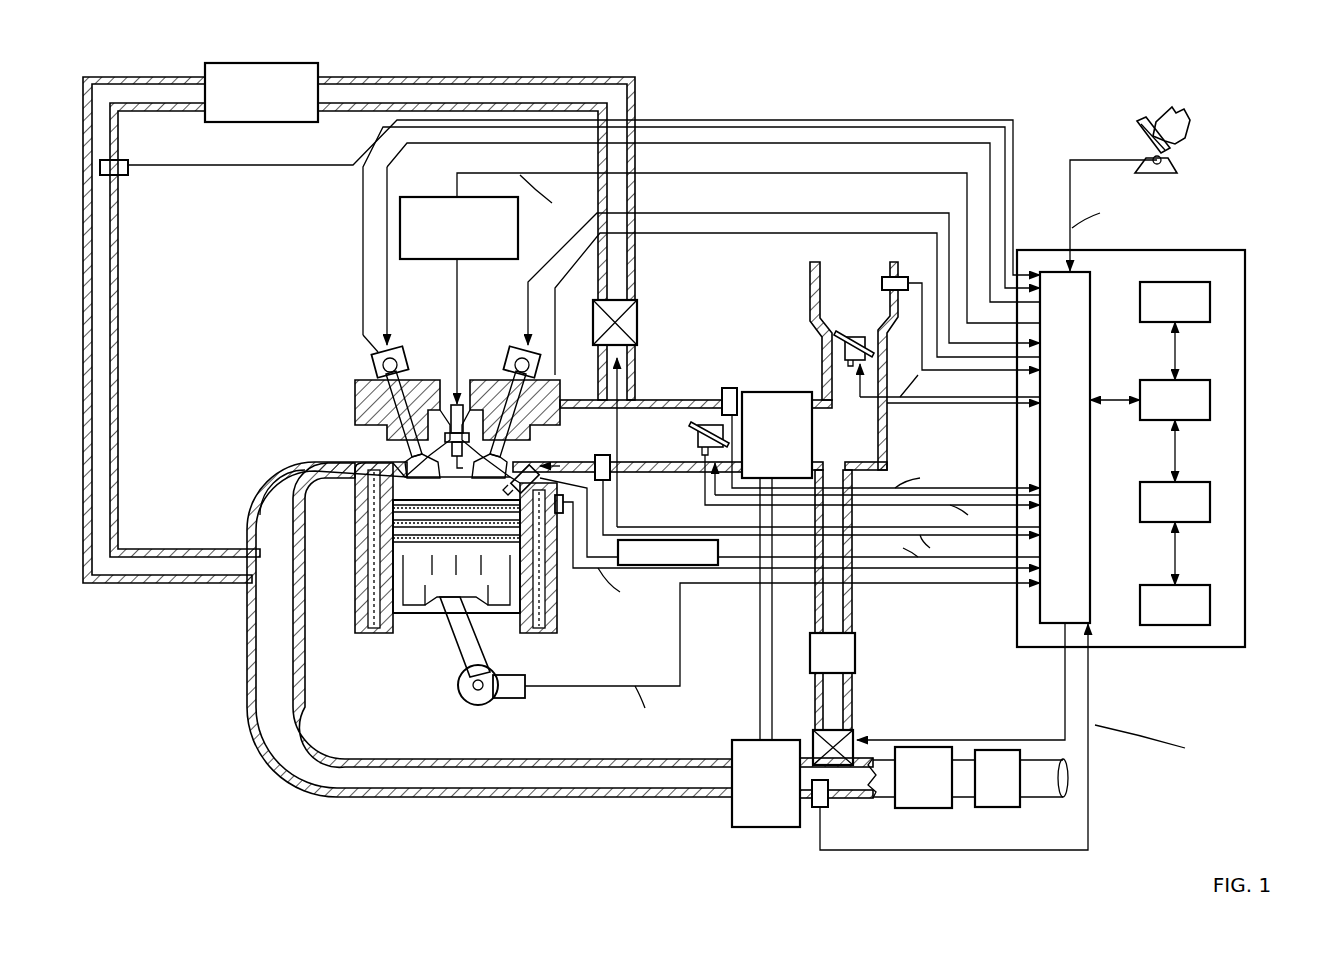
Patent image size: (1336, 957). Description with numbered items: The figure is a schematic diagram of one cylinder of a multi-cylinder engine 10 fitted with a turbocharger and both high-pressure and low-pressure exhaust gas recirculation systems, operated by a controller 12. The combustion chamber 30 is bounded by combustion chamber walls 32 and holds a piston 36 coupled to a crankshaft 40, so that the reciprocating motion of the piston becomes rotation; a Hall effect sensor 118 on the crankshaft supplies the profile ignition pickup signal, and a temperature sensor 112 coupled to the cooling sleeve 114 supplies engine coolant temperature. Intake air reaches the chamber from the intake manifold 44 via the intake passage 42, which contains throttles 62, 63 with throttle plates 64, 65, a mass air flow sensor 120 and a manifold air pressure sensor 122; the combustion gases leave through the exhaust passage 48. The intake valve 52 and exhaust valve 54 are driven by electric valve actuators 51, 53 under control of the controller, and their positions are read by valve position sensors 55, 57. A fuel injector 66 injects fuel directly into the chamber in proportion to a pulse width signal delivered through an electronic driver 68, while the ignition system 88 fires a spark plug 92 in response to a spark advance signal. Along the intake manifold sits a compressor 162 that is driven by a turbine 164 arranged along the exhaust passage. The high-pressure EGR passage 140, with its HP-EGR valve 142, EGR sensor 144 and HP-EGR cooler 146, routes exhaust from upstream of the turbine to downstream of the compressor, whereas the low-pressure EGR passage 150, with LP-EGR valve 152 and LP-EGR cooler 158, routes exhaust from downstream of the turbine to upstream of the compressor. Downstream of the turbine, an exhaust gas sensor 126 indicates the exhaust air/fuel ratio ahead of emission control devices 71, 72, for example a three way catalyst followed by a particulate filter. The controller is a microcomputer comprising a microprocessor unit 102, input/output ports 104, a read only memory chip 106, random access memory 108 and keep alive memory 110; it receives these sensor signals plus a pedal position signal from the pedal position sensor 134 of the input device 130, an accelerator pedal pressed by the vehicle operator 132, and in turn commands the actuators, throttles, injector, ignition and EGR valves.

The engine 10 is at (290, 333).
The controller 12 is at (1245, 250).
The combustion chamber 30 is at (368, 580).
The combustion chamber walls 32 is at (393, 630).
The piston 36 is at (440, 615).
The crankshaft 40 is at (466, 703).
The intake passage 42 is at (840, 307).
The intake manifold 44 is at (585, 436).
The exhaust passage 48 is at (312, 456).
The electric valve actuator 51 is at (516, 347).
The intake valve 52 is at (503, 462).
The electric valve actuator 53 is at (396, 347).
The exhaust valve 54 is at (405, 447).
The valve position sensor 55 is at (542, 370).
The valve position sensor 57 is at (375, 355).
The throttle 62 is at (695, 425).
The throttle 63 is at (837, 336).
The throttle plate 64 is at (702, 442).
The throttle plate 65 is at (845, 345).
The fuel injector 66 is at (507, 480).
The electronic driver 68 is at (718, 552).
The emission control device 71 is at (910, 787).
The emission control device 72 is at (984, 788).
The ignition system 88 is at (422, 197).
The spark plug 92 is at (458, 415).
The microprocessor unit 102 is at (1210, 398).
The input/output ports 104 is at (1110, 275).
The read only memory chip 106 is at (1210, 295).
The random access memory 108 is at (1210, 500).
The keep alive memory 110 is at (1210, 602).
The temperature sensor 112 is at (558, 515).
The cooling sleeve 114 is at (553, 622).
The Hall effect sensor 118 is at (510, 698).
The mass air flow sensor 120 is at (900, 280).
The manifold air pressure sensor 122 is at (597, 458).
The exhaust gas sensor 126 is at (828, 807).
The input device 130 is at (1135, 138).
The vehicle operator 132 is at (1185, 122).
The pedal position sensor 134 is at (1165, 160).
The high-pressure EGR passage 140 is at (532, 78).
The high-pressure EGR valve 142 is at (637, 325).
The EGR sensor 144 is at (124, 176).
The high-pressure EGR cooler 146 is at (243, 106).
The low-pressure EGR passage 150 is at (862, 597).
The low-pressure EGR valve 152 is at (813, 742).
The low-pressure EGR cooler 158 is at (813, 664).
The compressor 162 is at (758, 444).
The turbine 164 is at (747, 794).